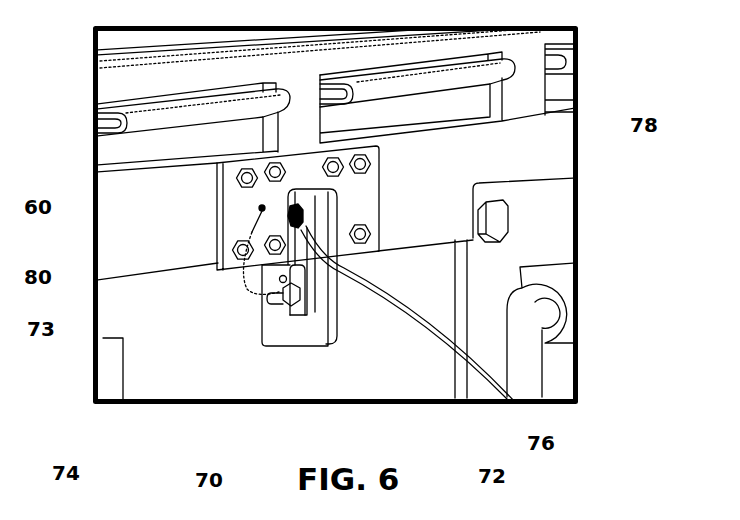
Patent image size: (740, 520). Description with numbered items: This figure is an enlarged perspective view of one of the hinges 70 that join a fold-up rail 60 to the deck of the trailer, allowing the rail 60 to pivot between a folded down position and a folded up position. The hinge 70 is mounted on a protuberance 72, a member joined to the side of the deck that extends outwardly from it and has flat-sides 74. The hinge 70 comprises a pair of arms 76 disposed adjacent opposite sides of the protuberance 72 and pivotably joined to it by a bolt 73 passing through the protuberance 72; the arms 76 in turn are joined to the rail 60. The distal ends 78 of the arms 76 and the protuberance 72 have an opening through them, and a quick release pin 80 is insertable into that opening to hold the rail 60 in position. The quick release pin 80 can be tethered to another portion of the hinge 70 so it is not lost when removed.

The rail 60 is at (143, 208).
The hinge 70 is at (290, 368).
The protuberance 72 is at (475, 472).
The bolt 73 is at (262, 300).
The flat-sides 74 is at (280, 327).
The arms 76 is at (526, 432).
The distal ends 78 is at (298, 208).
The quick release pin 80 is at (218, 252).